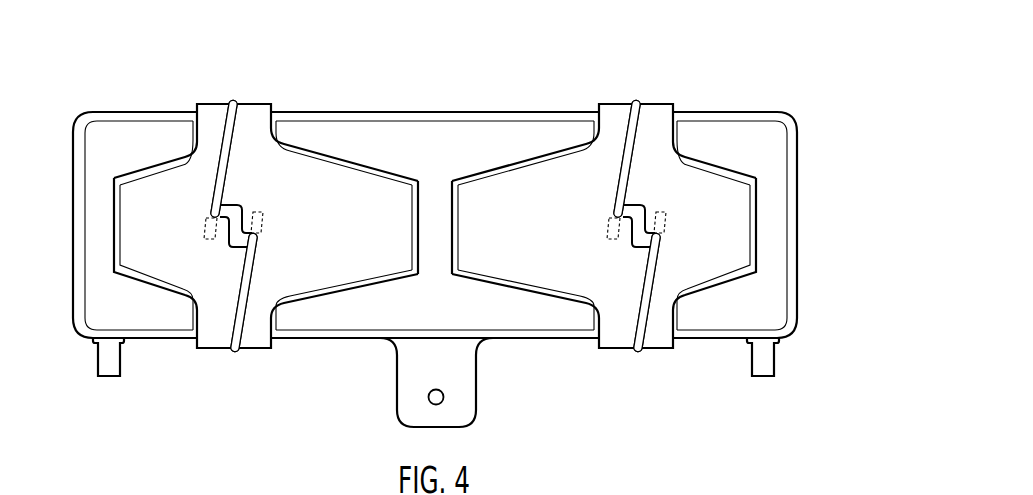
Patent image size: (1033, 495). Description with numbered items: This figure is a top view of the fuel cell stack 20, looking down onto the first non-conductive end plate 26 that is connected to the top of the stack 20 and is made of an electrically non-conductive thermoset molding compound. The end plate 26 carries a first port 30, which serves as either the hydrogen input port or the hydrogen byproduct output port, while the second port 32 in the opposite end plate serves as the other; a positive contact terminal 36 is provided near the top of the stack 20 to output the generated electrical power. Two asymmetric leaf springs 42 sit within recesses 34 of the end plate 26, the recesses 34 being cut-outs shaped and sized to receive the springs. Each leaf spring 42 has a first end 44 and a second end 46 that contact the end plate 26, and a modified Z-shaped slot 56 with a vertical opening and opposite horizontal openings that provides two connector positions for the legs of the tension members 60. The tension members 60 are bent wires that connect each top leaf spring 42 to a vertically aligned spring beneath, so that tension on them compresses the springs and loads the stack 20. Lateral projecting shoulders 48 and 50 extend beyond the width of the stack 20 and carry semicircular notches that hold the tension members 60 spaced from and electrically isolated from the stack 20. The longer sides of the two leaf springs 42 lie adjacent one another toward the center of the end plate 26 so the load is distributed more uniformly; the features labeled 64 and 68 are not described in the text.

The fuel cell stack 20 is at (736, 46).
The first non-conductive end plate 26 is at (768, 111).
The first port 30 is at (97, 363).
The second port 32 is at (752, 363).
The recesses 34 is at (148, 177).
The positive contact terminal 36 is at (462, 408).
The asymmetric leaf spring 42 is at (322, 190).
The first end 44 is at (403, 212).
The second end 46 is at (124, 222).
The lateral projecting shoulder 48 is at (652, 103).
The lateral projecting shoulder 50 is at (250, 103).
The slot 56 is at (233, 212).
The tension member 60 is at (232, 120).
The contact portion 64 is at (226, 168).
The stop projection 68 is at (205, 228).